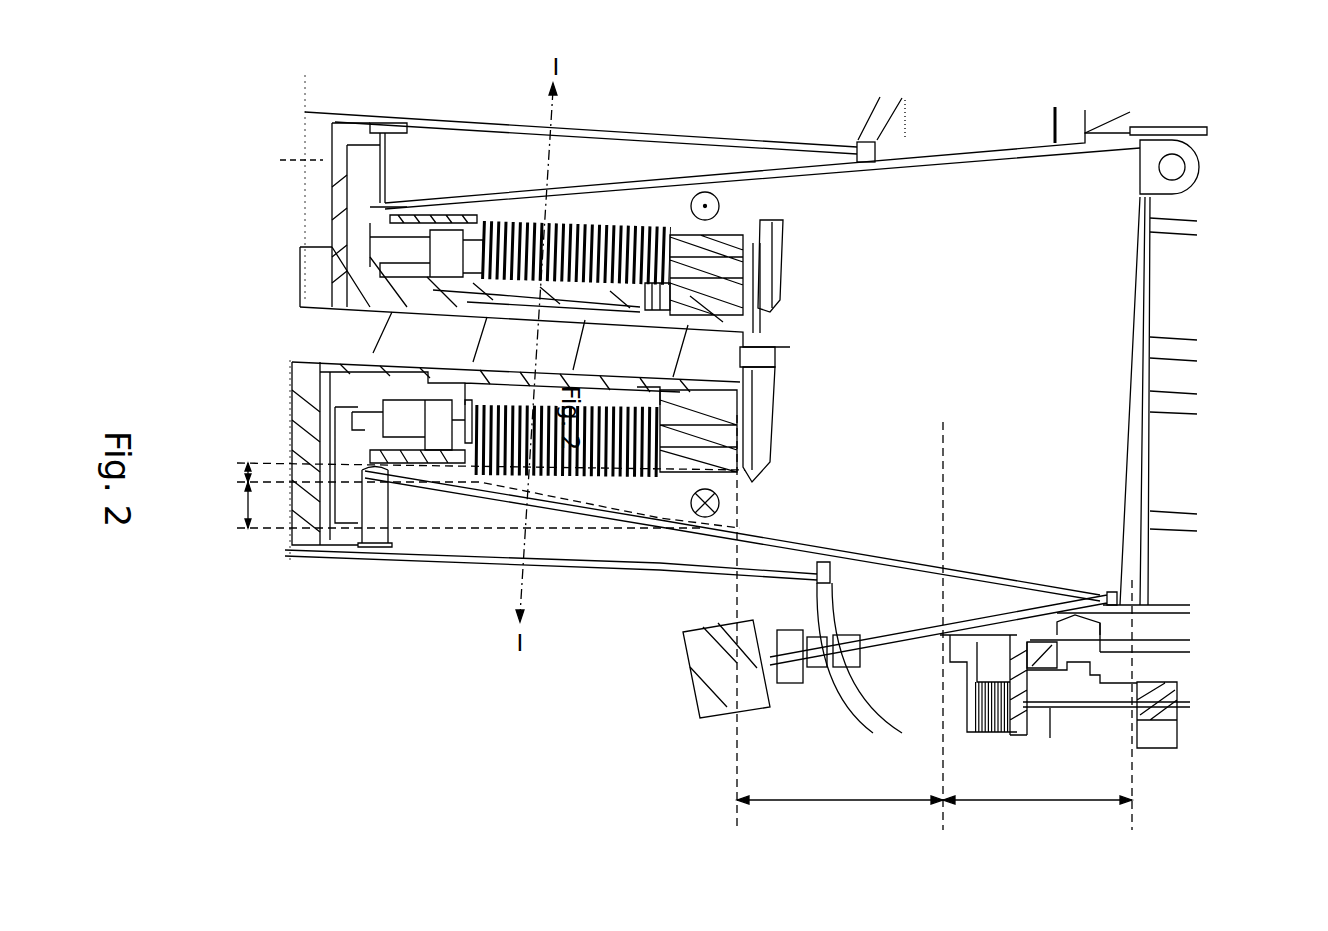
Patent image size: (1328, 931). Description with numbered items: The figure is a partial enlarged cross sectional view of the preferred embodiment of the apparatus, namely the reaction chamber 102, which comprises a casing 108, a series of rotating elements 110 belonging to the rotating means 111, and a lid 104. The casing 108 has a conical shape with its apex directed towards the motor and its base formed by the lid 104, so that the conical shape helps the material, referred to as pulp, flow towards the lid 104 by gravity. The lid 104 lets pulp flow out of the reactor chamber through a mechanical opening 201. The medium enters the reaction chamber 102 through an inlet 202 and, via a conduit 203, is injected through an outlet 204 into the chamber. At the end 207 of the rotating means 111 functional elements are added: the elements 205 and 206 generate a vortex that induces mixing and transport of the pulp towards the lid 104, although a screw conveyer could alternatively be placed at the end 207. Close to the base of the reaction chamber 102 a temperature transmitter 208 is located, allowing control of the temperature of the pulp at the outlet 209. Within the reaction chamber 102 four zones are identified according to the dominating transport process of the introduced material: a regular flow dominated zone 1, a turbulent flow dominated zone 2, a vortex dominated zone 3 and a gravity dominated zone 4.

The regular flow dominated zone 1 is at (226, 467).
The turbulent flow dominated zone 2 is at (226, 505).
The vortex dominated zone 3 is at (840, 819).
The gravity dominated zone 4 is at (1037, 819).
The reaction chamber 102 is at (1213, 121).
The lid 104 is at (1152, 300).
The casing 108 is at (958, 155).
The rotating elements 110 is at (485, 463).
The rotating means 111 is at (340, 327).
The mechanical opening 201 is at (1172, 168).
The inlet 202 is at (360, 167).
The conduit 203 is at (380, 247).
The outlet 204 is at (598, 223).
The vortex generating element 205 is at (780, 263).
The vortex generating element 206 is at (767, 450).
The end of the rotating means 207 is at (777, 350).
The temperature transmitter 208 is at (718, 670).
The outlet 209 is at (1135, 592).